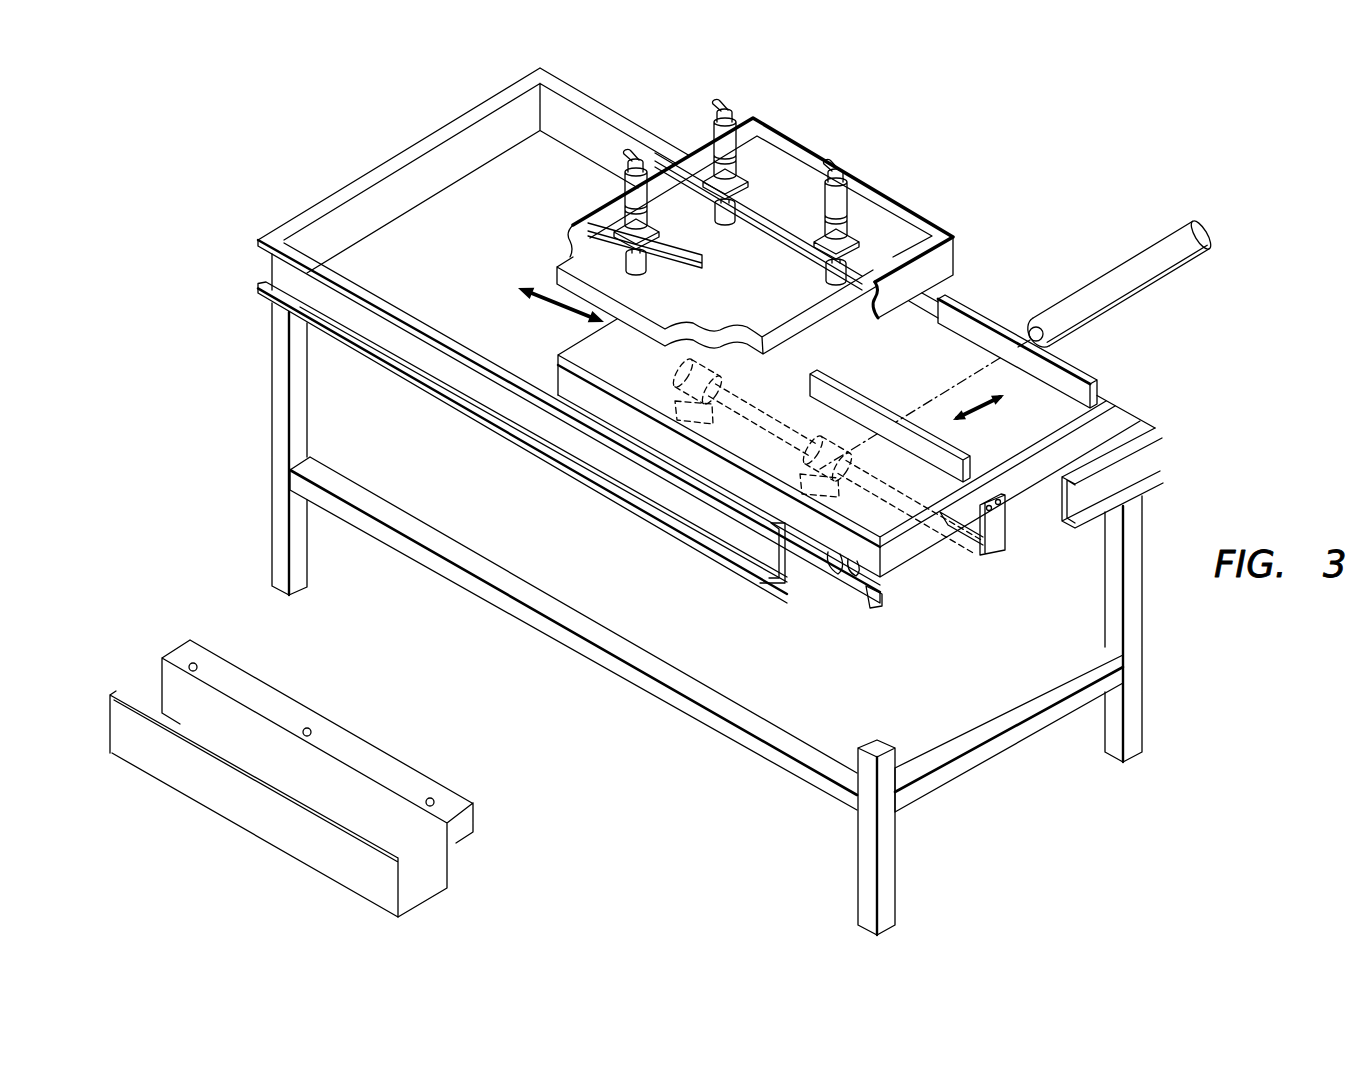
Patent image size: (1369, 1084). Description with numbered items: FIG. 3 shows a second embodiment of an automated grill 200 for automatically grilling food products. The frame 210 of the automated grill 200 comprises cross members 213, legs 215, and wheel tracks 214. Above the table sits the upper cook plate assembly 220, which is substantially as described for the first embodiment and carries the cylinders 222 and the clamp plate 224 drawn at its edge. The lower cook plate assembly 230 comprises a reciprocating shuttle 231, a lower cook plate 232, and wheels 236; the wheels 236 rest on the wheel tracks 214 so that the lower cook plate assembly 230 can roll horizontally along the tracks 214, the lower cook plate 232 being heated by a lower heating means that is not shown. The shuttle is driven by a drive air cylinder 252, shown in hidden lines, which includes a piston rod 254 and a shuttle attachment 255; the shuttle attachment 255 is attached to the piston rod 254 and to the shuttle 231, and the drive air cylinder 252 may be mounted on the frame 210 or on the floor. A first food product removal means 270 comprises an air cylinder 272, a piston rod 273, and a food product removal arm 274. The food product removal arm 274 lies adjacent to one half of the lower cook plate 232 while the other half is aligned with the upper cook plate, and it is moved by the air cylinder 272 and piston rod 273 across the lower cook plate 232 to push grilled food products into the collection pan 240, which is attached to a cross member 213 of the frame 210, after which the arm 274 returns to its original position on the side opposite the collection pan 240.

The automated grill 200 is at (1050, 126).
The frame 210 is at (237, 283).
The cross members 213 is at (450, 410).
The wheel tracks 214 is at (865, 602).
The legs 215 is at (306, 386).
The upper cook plate assembly 220 is at (931, 184).
The clamp cylinder 222 is at (625, 196).
The clamp plate 224 is at (950, 253).
The lower cook plate assembly 230 is at (1112, 422).
The reciprocating shuttle 231 is at (1013, 497).
The lower cook plate 232 is at (570, 344).
The wheels 236 is at (832, 564).
The collection pan 240 is at (471, 898).
The drive air cylinder 252 is at (748, 418).
The piston rod 254 is at (965, 542).
The shuttle attachment 255 is at (995, 547).
The first food product removal means 270 is at (1022, 296).
The air cylinder 272 is at (1216, 226).
The piston rod 273 is at (920, 392).
The food product removal arm 274 is at (1083, 369).